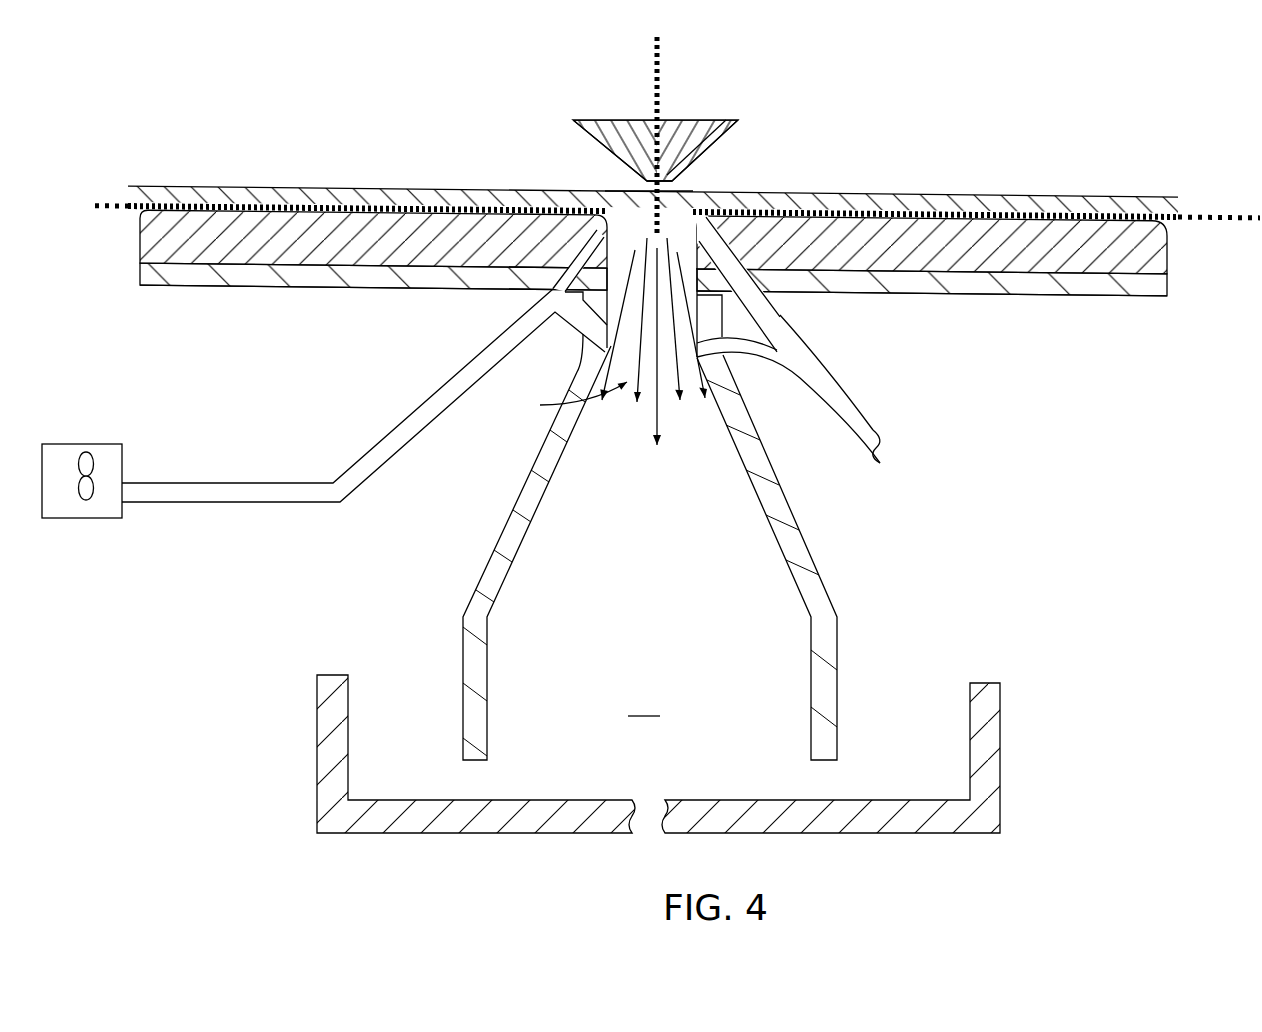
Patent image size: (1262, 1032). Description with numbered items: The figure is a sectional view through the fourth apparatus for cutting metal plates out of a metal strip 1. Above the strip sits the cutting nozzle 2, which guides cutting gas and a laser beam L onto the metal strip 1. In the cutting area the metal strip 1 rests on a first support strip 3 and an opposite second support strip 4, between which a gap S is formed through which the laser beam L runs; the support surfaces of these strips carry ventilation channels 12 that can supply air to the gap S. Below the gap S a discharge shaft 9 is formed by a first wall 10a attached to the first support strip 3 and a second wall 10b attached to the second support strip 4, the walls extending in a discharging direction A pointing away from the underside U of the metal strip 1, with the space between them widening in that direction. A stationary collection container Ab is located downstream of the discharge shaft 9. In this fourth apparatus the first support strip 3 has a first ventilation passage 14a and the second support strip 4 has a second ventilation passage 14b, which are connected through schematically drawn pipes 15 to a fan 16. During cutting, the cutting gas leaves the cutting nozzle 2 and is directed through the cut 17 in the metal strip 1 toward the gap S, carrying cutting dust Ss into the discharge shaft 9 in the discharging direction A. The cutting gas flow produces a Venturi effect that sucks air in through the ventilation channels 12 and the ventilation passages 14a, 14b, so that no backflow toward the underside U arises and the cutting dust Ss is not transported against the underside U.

The metal strip 1 is at (1097, 203).
The cutting nozzle 2 is at (705, 150).
The first support strip 3 is at (300, 243).
The second support strip 4 is at (912, 243).
The discharge shaft 9 is at (644, 704).
The first wall 10a is at (487, 578).
The second wall 10b is at (803, 567).
The ventilation channels 12 is at (272, 207).
The first ventilation passage 14a is at (592, 240).
The second ventilation passage 14b is at (775, 303).
The pipes 15 is at (253, 490).
The fan 16 is at (65, 485).
The cut 17 is at (648, 207).
The laser beam L is at (665, 70).
The underside U is at (690, 206).
The gap S is at (680, 240).
The cutting dust Ss is at (568, 400).
The discharging direction A is at (653, 354).
The collection container Ab is at (330, 735).